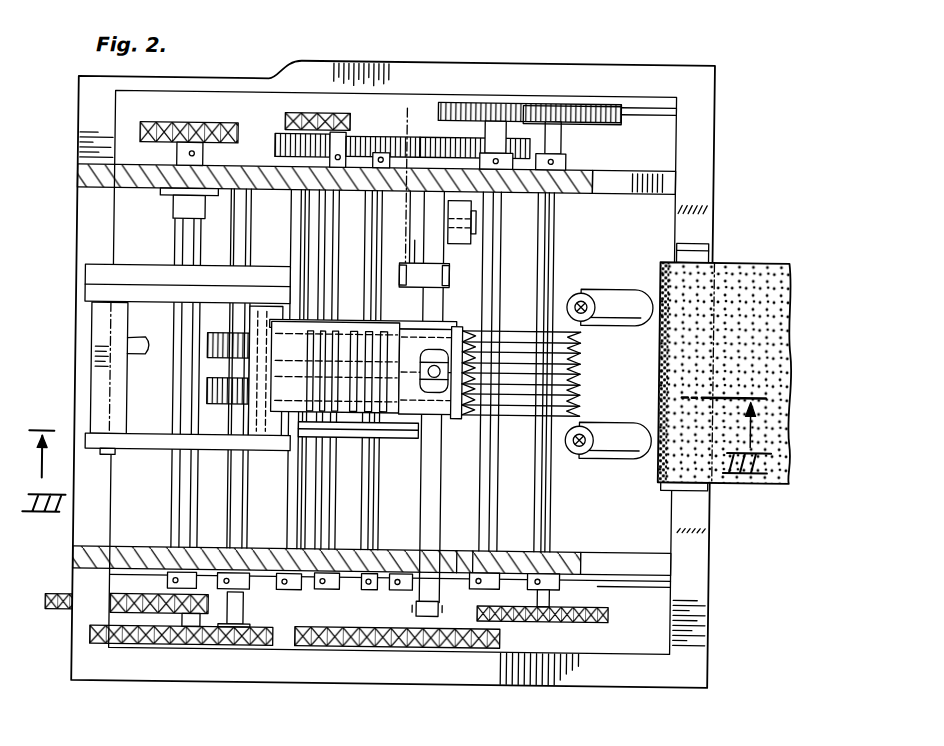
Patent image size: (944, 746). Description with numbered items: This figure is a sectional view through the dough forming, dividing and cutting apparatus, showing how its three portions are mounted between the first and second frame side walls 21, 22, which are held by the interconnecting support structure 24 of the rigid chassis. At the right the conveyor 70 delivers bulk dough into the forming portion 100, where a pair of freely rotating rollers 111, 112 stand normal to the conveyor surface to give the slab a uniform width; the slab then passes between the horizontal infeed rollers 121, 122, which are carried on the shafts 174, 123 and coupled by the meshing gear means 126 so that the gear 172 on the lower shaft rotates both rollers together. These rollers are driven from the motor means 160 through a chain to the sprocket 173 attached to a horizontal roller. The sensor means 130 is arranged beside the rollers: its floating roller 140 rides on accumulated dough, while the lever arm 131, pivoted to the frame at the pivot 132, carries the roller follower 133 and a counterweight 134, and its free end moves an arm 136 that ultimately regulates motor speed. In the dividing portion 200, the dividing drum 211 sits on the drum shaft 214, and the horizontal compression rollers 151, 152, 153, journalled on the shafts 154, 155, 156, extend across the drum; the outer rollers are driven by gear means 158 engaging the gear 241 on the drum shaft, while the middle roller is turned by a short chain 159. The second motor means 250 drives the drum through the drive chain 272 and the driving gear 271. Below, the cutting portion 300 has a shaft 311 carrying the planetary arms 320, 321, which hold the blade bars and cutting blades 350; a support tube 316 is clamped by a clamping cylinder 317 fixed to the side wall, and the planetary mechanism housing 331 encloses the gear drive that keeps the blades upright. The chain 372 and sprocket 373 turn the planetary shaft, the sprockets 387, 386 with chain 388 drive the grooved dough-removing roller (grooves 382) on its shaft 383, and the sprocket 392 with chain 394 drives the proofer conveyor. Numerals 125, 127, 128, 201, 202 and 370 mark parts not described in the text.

The first frame side wall 21 is at (647, 166).
The second frame side wall 22 is at (600, 563).
The interconnecting support structure 24 is at (651, 72).
The conveyor 70 is at (725, 367).
The forming portion 100 is at (640, 507).
The freely-rotating roller 111 is at (648, 299).
The freely-rotating roller 112 is at (612, 418).
The lower horizontal dough infeed roller 121 is at (585, 337).
The upper horizontal dough infeed roller 122 is at (511, 331).
The upper roller shaft 123 is at (530, 533).
The shaft 125 is at (404, 200).
The meshing gear means 126 is at (533, 95).
The shaft 127 is at (674, 109).
The gear 128 is at (458, 100).
The sensor means 130 is at (446, 600).
The lever arm 131 is at (433, 501).
The pivot 132 is at (448, 270).
The roller follower 133 is at (431, 367).
The counterweight 134 is at (470, 206).
The arm 136 is at (428, 618).
The floating roller 140 is at (443, 414).
The compression roller 151 is at (355, 328).
The compression roller 152 is at (287, 546).
The compression roller 153 is at (282, 416).
The shaft 154 is at (395, 592).
The shaft 155 is at (349, 578).
The shaft 156 is at (283, 575).
The gear means 158 is at (273, 153).
The short chain 159 is at (307, 113).
The motor means 160 is at (568, 627).
The gear 172 is at (580, 630).
The sprocket 173 is at (703, 614).
The lower roller shaft 174 is at (592, 491).
The dividing portion 200 is at (398, 92).
The clamp plate 201 is at (510, 318).
The roller arm 202 is at (565, 450).
The dividing drum 211 is at (497, 426).
The drum shaft 214 is at (402, 532).
The gear 241 is at (527, 145).
The second motor means 250 is at (318, 655).
The driving gear 271 is at (392, 648).
The drive chain 272 is at (565, 690).
The cutting portion 300 is at (157, 358).
The shaft 311 is at (184, 407).
The support tube 316 is at (188, 238).
The clamping cylinder 317 is at (200, 213).
The planetary arm 320 is at (96, 296).
The planetary arm 321 is at (86, 441).
The planetary mechanism housing 331 is at (148, 282).
The cutting blade 350 is at (133, 345).
The drive 370 is at (138, 96).
The chain 372 is at (214, 104).
The sprocket 373 is at (76, 137).
The axially aligned grooves 382 is at (210, 383).
The shaft 383 is at (243, 477).
The sprocket 386 is at (238, 648).
The sprocket 387 is at (168, 648).
The chain 388 is at (100, 652).
The sprocket 392 is at (178, 596).
The chain 394 is at (50, 596).